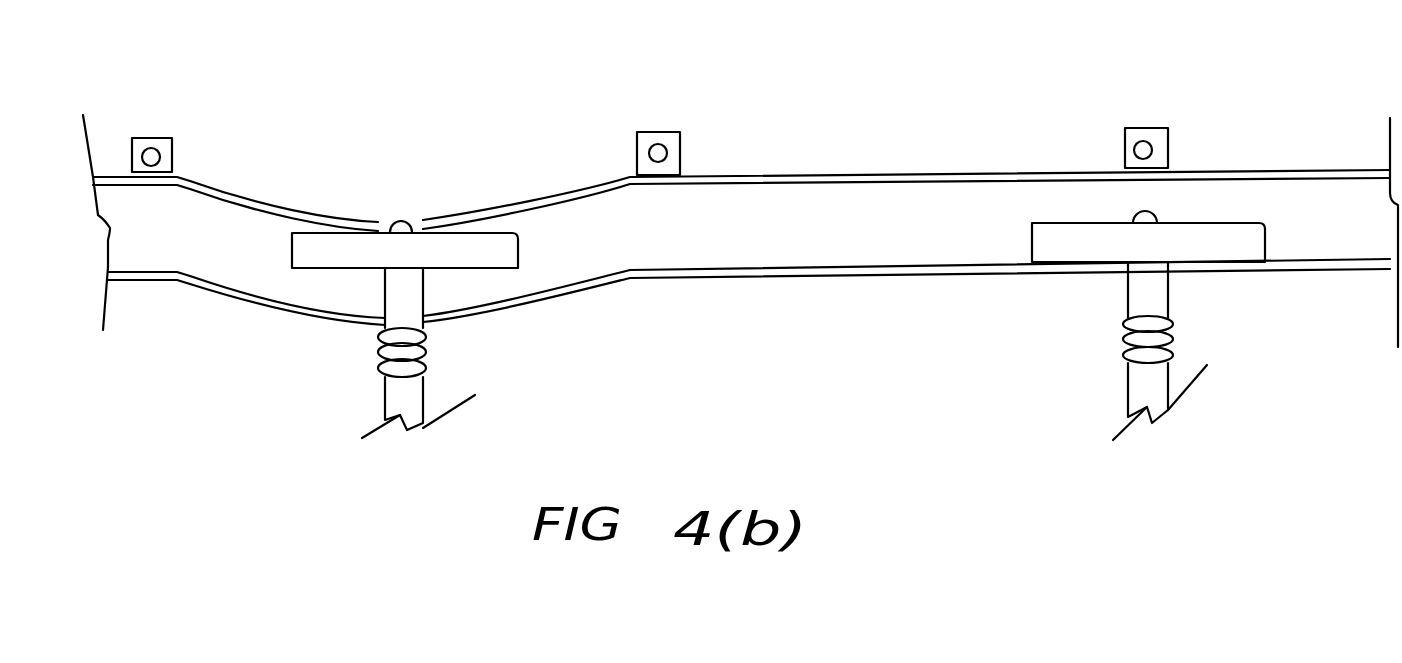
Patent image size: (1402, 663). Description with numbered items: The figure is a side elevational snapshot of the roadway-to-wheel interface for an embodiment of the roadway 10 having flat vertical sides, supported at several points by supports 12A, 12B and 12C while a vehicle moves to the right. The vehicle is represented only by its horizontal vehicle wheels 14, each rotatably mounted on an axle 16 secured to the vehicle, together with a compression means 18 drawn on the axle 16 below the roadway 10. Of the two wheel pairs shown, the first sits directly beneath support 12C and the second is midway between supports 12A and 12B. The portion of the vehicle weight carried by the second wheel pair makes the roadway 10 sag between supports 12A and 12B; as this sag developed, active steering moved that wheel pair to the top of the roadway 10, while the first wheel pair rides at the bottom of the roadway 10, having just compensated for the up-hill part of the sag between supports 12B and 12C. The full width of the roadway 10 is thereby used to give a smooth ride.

The roadway 10 is at (800, 203).
The support 12A is at (163, 150).
The support 12B is at (673, 145).
The support 12C is at (1160, 140).
The vehicle wheel 14 is at (332, 248).
The axle 16 is at (407, 303).
The compression means 18 is at (397, 352).